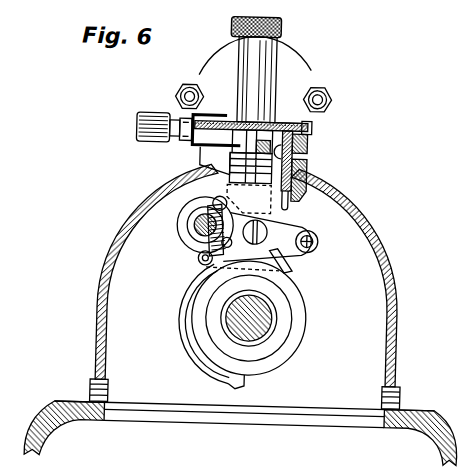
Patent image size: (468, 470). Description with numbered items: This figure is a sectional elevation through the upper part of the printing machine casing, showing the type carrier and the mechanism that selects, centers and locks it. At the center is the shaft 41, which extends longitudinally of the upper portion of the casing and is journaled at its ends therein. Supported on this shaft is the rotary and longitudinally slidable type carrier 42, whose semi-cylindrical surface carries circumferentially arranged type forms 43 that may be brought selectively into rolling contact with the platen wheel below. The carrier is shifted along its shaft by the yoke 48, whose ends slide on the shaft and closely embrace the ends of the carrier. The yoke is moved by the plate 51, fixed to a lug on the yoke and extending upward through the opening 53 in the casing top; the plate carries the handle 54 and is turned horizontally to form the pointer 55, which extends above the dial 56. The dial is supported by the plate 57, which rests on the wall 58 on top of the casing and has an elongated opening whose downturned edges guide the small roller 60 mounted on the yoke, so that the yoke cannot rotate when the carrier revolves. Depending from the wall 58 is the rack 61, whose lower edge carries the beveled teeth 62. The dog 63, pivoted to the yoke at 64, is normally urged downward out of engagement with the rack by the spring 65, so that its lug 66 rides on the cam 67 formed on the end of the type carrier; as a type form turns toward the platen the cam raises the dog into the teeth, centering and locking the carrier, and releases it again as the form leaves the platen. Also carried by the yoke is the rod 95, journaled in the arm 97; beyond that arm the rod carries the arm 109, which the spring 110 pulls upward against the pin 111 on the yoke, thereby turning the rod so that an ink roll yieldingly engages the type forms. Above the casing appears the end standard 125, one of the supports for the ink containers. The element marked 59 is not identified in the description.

The shaft 41 is at (268, 329).
The type carrier 42 is at (234, 383).
The type forms 43 is at (196, 370).
The yoke 48 is at (146, 200).
The plate 51 is at (206, 151).
The opening 53 is at (203, 161).
The handle 54 is at (135, 130).
The pointer 55 is at (219, 114).
The dial 56 is at (268, 123).
The plate 57 is at (306, 127).
The wall 58 is at (304, 142).
The spring 59 is at (212, 138).
The roller 60 is at (240, 124).
The rack 61 is at (284, 208).
The beveled teeth 62 is at (289, 211).
The dog 63 is at (272, 218).
The pivot 64 is at (198, 229).
The spring 65 is at (183, 207).
The lug 66 is at (201, 277).
The cam 67 is at (303, 300).
The rod 95 is at (312, 239).
The arm 97 is at (310, 229).
The arm 109 is at (288, 254).
The spring 110 is at (196, 259).
The pin 111 is at (254, 221).
The end standard 125 is at (288, 68).